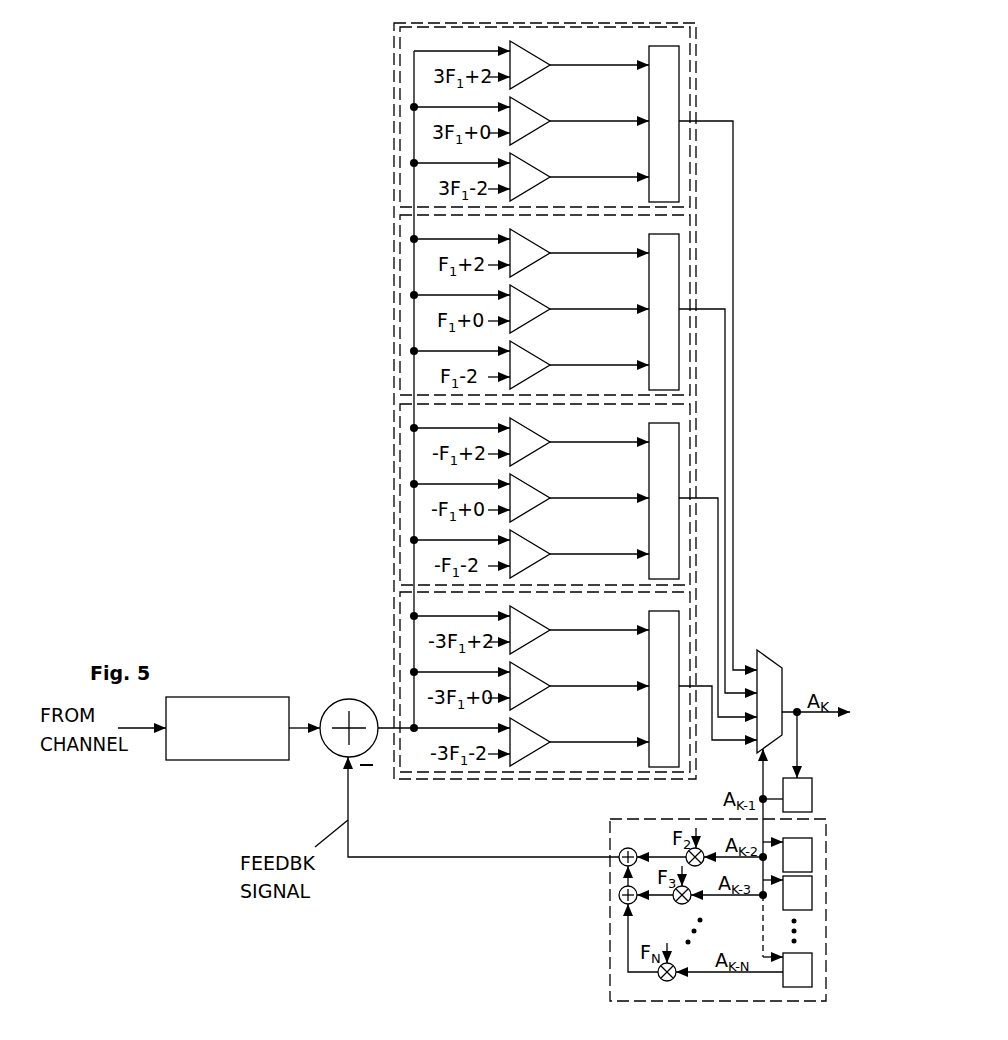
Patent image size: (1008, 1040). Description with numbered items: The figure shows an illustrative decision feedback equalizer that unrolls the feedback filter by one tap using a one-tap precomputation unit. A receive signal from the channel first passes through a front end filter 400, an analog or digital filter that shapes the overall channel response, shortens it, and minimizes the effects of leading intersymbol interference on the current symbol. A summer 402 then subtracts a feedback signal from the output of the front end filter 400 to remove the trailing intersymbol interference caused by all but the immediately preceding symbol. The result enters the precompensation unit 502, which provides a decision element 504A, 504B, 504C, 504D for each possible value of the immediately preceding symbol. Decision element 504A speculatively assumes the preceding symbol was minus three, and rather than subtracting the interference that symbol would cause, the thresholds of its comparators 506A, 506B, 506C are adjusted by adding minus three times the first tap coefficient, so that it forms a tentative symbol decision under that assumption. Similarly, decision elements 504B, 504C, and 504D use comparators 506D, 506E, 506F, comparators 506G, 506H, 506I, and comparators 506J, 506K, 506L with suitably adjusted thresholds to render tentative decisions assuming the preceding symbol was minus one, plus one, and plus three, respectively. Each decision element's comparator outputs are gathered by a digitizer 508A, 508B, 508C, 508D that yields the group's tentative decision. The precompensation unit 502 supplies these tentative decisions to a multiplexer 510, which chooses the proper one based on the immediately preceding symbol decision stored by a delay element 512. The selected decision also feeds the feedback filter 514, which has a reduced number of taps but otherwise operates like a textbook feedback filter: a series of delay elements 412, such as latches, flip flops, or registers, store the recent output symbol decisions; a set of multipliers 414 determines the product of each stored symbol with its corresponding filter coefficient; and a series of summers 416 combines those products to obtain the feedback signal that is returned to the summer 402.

The front end filter 400 is at (213, 760).
The summer 402 is at (335, 752).
The precompensation unit 502 is at (393, 690).
The decision element 504A is at (399, 643).
The decision element 504B is at (399, 455).
The decision element 504C is at (399, 266).
The decision element 504D is at (399, 78).
The comparator 506A is at (540, 730).
The comparator 506B is at (540, 674).
The comparator 506C is at (540, 618).
The comparator 506D is at (540, 542).
The comparator 506E is at (540, 486).
The comparator 506F is at (540, 430).
The comparator 506G is at (540, 353).
The comparator 506H is at (540, 297).
The comparator 506I is at (540, 241).
The comparator 506J is at (540, 165).
The comparator 506K is at (540, 109).
The comparator 506L is at (540, 53).
The digitizer 508A is at (648, 755).
The digitizer 508B is at (648, 567).
The digitizer 508C is at (648, 378).
The digitizer 508D is at (648, 190).
The multiplexer 510 is at (766, 656).
The delay element 512 is at (812, 792).
The delay elements 412 is at (812, 852).
The multipliers 414 is at (699, 865).
The summers 416 is at (618, 860).
The feedback filter 514 is at (608, 978).